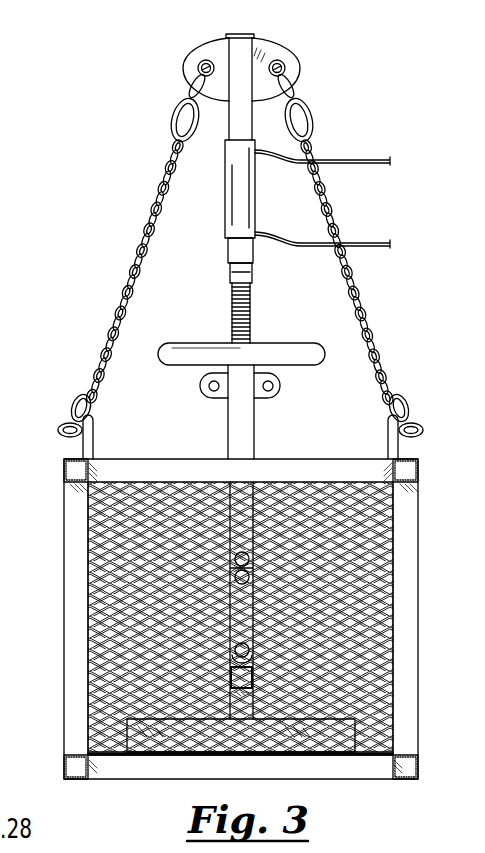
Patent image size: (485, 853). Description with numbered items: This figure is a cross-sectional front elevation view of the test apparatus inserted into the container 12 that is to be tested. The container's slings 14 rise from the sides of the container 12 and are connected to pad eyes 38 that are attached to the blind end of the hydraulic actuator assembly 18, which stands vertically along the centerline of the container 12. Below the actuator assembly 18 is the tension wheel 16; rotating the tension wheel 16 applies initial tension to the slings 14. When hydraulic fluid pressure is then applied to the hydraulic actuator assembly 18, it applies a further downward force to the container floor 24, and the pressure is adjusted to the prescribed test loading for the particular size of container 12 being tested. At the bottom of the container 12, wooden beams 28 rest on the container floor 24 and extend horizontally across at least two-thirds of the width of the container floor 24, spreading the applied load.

The container 12 is at (55, 616).
The slings 14 is at (137, 236).
The tension wheel 16 is at (268, 353).
The hydraulic actuator assembly 18 is at (236, 205).
The container floor 24 is at (345, 760).
The wooden beams 28 is at (185, 746).
The pad eyes 38 is at (199, 54).